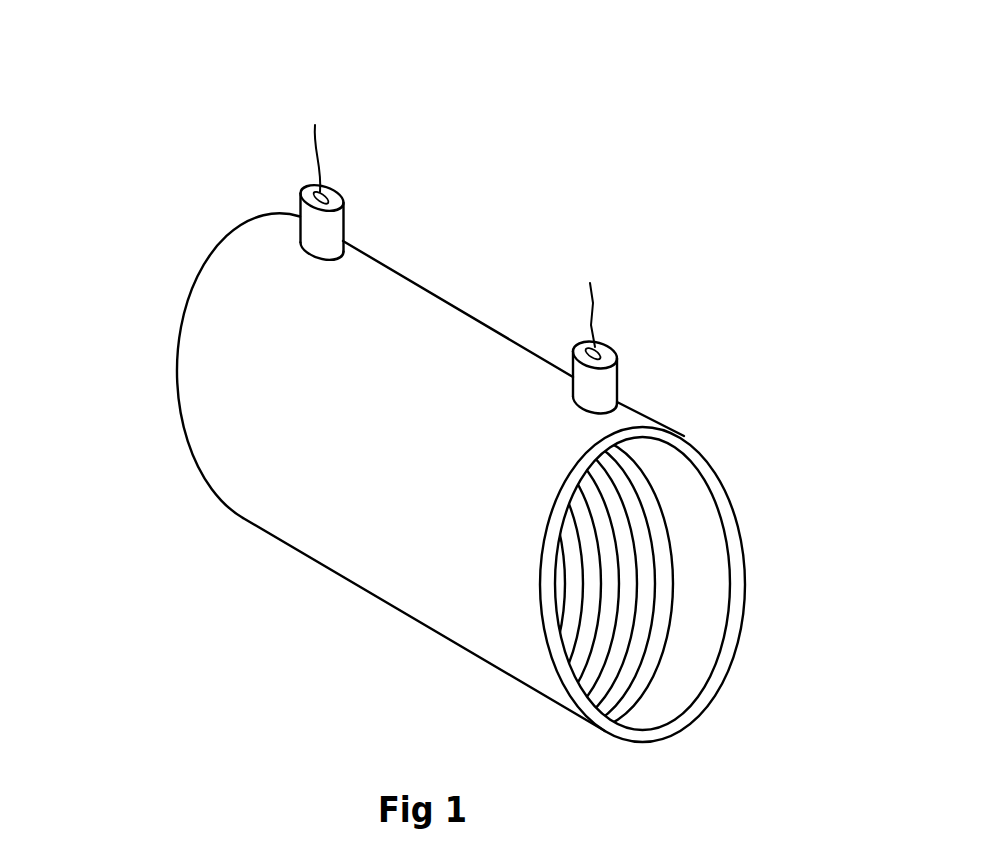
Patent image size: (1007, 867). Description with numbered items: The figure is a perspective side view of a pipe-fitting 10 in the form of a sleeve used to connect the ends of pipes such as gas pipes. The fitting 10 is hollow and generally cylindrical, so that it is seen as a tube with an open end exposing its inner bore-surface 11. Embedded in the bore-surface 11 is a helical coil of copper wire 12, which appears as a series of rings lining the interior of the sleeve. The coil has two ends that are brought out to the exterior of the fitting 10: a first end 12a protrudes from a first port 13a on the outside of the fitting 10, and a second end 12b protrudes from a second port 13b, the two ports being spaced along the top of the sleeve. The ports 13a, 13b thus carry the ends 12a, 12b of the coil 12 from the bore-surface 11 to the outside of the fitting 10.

The pipe-fitting 10 is at (393, 272).
The inner bore-surface 11 is at (701, 582).
The helical coil of copper wire 12 is at (657, 680).
The first end 12a is at (313, 137).
The second end 12b is at (600, 302).
The first port 13a is at (322, 240).
The second port 13b is at (597, 397).